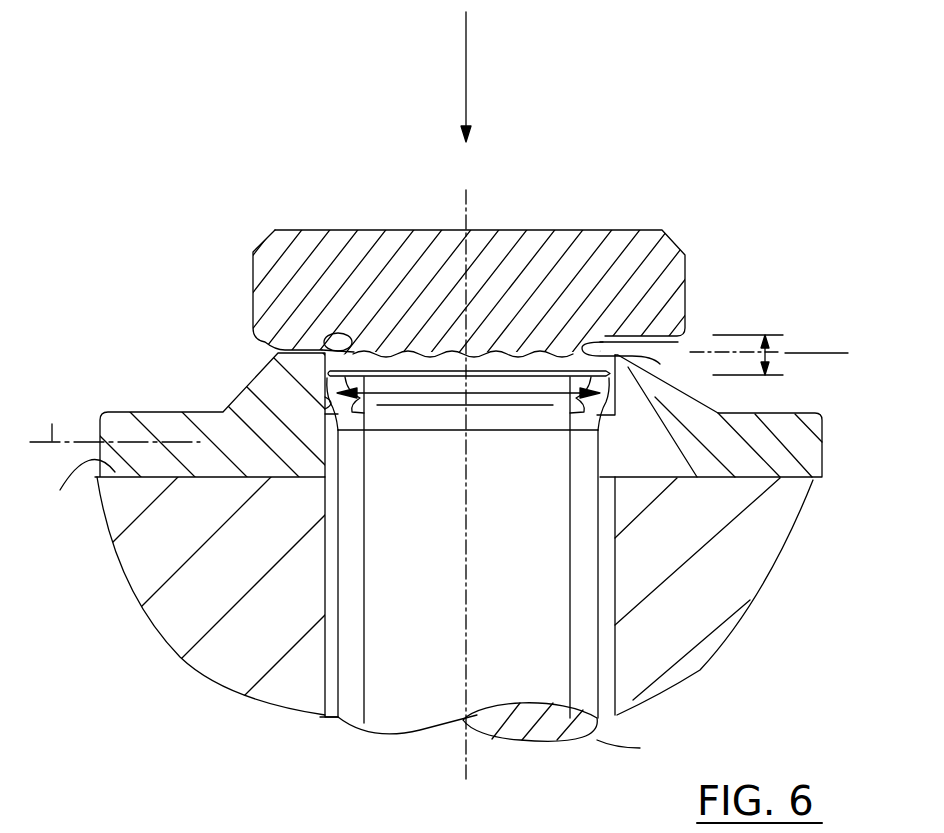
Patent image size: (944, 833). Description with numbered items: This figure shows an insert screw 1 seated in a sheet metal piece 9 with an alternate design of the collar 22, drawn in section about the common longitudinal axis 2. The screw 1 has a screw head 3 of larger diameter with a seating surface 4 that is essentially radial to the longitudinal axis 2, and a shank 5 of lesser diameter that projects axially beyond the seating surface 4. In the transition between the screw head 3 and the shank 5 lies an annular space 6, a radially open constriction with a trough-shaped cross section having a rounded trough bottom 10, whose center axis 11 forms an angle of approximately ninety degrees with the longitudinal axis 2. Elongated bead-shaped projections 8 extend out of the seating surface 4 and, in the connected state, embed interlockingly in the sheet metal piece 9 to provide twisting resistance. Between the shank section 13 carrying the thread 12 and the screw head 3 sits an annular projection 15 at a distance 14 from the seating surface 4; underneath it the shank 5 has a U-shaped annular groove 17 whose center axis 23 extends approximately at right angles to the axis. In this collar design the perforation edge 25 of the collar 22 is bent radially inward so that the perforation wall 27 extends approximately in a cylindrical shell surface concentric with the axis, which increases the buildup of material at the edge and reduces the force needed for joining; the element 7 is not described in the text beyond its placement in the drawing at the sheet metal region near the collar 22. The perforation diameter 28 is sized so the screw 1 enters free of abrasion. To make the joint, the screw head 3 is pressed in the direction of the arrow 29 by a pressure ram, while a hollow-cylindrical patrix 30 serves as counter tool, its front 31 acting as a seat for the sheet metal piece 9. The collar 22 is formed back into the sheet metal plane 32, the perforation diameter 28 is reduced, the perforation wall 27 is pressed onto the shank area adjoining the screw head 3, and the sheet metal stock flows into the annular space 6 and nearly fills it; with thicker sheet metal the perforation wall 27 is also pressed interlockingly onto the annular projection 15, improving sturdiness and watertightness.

The screw 1 is at (430, 697).
The longitudinal axis 2 is at (470, 205).
The screw head 3 is at (396, 298).
The seating surface 4 is at (630, 356).
The shank 5 is at (612, 752).
The annular space 6 is at (347, 334).
The housing flange 7 is at (238, 363).
The projections 8 is at (597, 338).
The sheet metal piece 9 is at (770, 444).
The trough bottom 10 is at (330, 338).
The center axis 11 is at (812, 353).
The thread 12 is at (583, 577).
The shank section 13 is at (338, 600).
The distance 14 is at (770, 350).
The annular projection 15 is at (527, 372).
The annular groove 17 is at (343, 413).
The collar 22 is at (270, 378).
The center axis 23 is at (510, 407).
The perforation edge 25 is at (628, 385).
The perforation wall 27 is at (325, 401).
The perforation diameter 28 is at (445, 393).
The arrow 29 is at (470, 68).
The patrix 30 is at (760, 535).
The front 31 is at (75, 490).
The sheet metal plane 32 is at (115, 418).